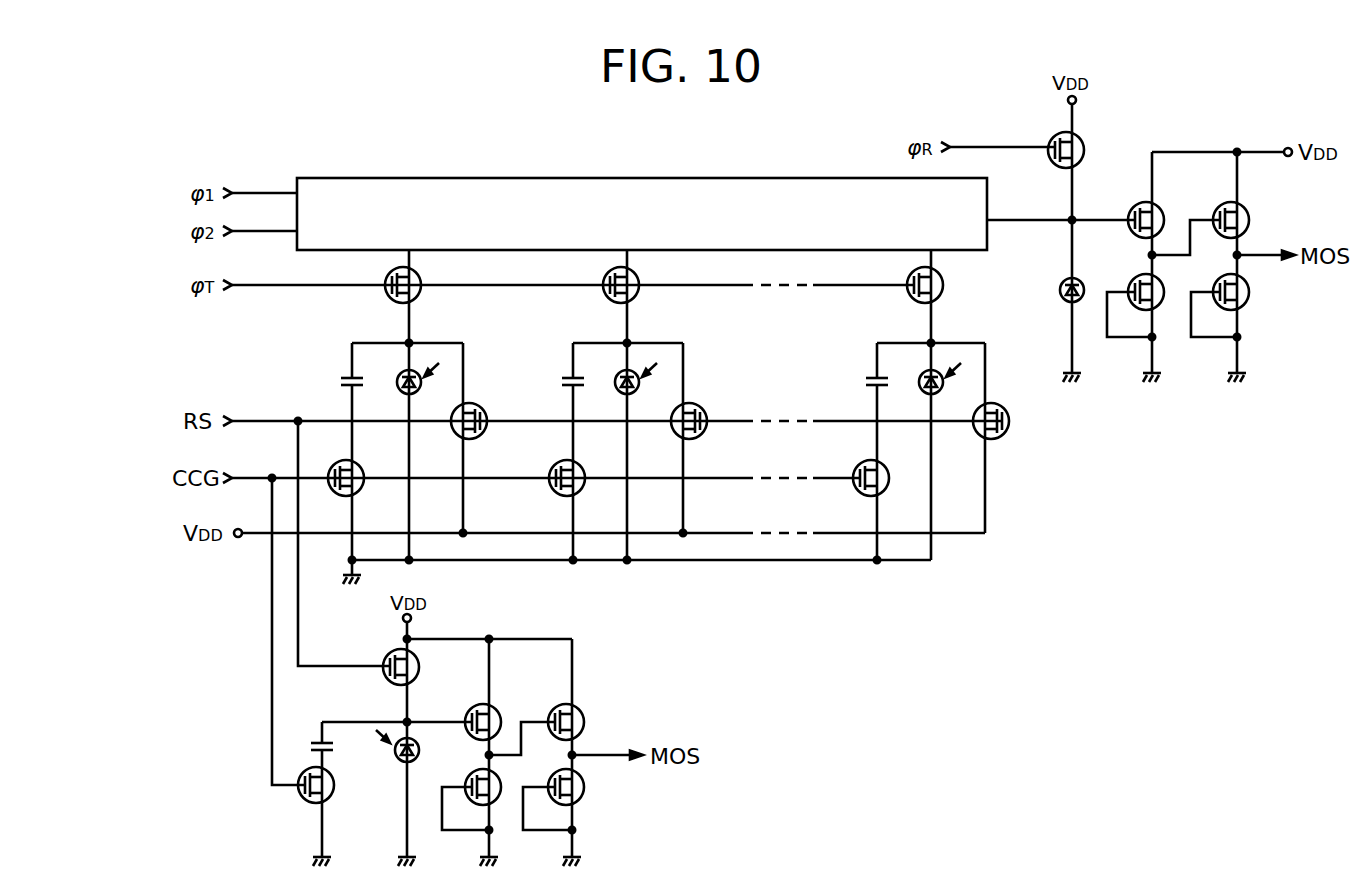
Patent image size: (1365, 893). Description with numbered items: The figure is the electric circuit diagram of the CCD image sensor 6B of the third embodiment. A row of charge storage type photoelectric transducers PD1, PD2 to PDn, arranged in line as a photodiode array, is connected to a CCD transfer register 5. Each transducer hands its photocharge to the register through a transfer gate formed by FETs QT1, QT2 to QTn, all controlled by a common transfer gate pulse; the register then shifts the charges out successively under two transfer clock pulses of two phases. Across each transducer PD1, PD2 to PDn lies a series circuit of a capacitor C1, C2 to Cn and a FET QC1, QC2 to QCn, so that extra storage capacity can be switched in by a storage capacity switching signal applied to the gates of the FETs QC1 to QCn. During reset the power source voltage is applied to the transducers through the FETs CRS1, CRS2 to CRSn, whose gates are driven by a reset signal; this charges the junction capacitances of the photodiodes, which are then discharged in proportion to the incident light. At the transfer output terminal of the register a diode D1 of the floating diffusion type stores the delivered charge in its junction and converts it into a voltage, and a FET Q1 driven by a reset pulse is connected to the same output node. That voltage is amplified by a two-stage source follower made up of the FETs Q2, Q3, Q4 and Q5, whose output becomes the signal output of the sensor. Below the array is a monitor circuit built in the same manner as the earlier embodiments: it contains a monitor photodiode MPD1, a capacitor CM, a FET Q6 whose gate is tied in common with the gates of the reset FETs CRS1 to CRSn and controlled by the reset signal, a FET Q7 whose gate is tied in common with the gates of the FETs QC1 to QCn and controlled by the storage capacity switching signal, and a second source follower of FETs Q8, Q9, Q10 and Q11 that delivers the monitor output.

The CCD transfer register 5 is at (344, 189).
The CCD image sensor 6B is at (452, 148).
The transfer gate FET QT1 is at (412, 296).
The transfer gate FET QT2 is at (630, 296).
The transfer gate FET QTn is at (934, 296).
The charge storage type photoelectric transducer PD1 is at (400, 372).
The charge storage type photoelectric transducer PD2 is at (618, 372).
The charge storage type photoelectric transducer PDn is at (922, 372).
The capacitor C1 is at (340, 382).
The capacitor C2 is at (561, 382).
The capacitor Cn is at (865, 382).
The reset FET CRS1 is at (486, 410).
The reset FET CRS2 is at (706, 410).
The reset FET CRSn is at (1008, 410).
The storage capacity switching FET QC1 is at (343, 452).
The storage capacity switching FET QC2 is at (562, 452).
The storage capacity switching FET QCn is at (864, 455).
The reset transistor of output stage Q1 is at (1090, 130).
The output diode D1 is at (1082, 283).
The source follower FET Q2 is at (1158, 210).
The source follower FET Q3 is at (1158, 294).
The source follower FET Q4 is at (1243, 210).
The source follower FET Q5 is at (1243, 300).
The monitor circuit FET Q6 is at (420, 668).
The monitor circuit FET Q7 is at (307, 805).
The monitor capacitor CM is at (312, 746).
The monitor photodiode MPD1 is at (401, 764).
The monitor amplifier transistor Q8 is at (495, 708).
The monitor amplifier load transistor Q9 is at (478, 769).
The monitor amplifier transistor Q10 is at (578, 708).
The monitor amplifier load transistor Q11 is at (584, 787).